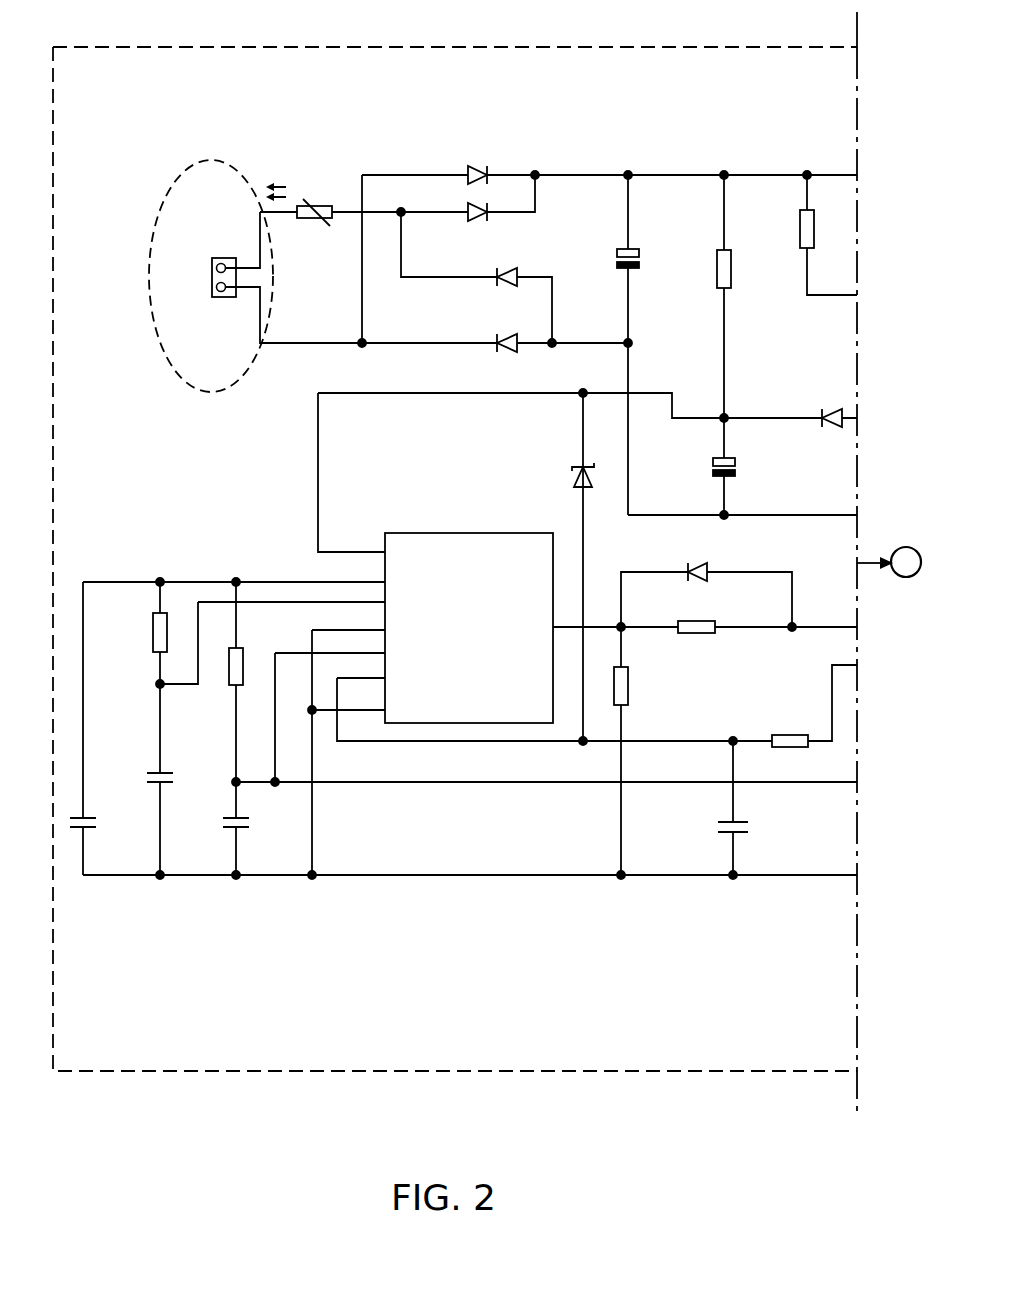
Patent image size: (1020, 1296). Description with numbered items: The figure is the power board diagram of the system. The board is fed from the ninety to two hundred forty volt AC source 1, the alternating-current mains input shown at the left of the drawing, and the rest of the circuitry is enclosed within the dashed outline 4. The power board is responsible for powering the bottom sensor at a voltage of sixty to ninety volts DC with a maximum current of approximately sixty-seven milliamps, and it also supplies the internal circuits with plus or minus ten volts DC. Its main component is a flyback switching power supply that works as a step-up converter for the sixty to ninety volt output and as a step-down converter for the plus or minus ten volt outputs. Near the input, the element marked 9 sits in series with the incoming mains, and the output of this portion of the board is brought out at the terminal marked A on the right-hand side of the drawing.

The power supply circuit 4 is at (131, 41).
The 90 to 240 VAC source 1 is at (185, 174).
The thermistor R3 9 is at (330, 204).
The output terminal A is at (889, 562).